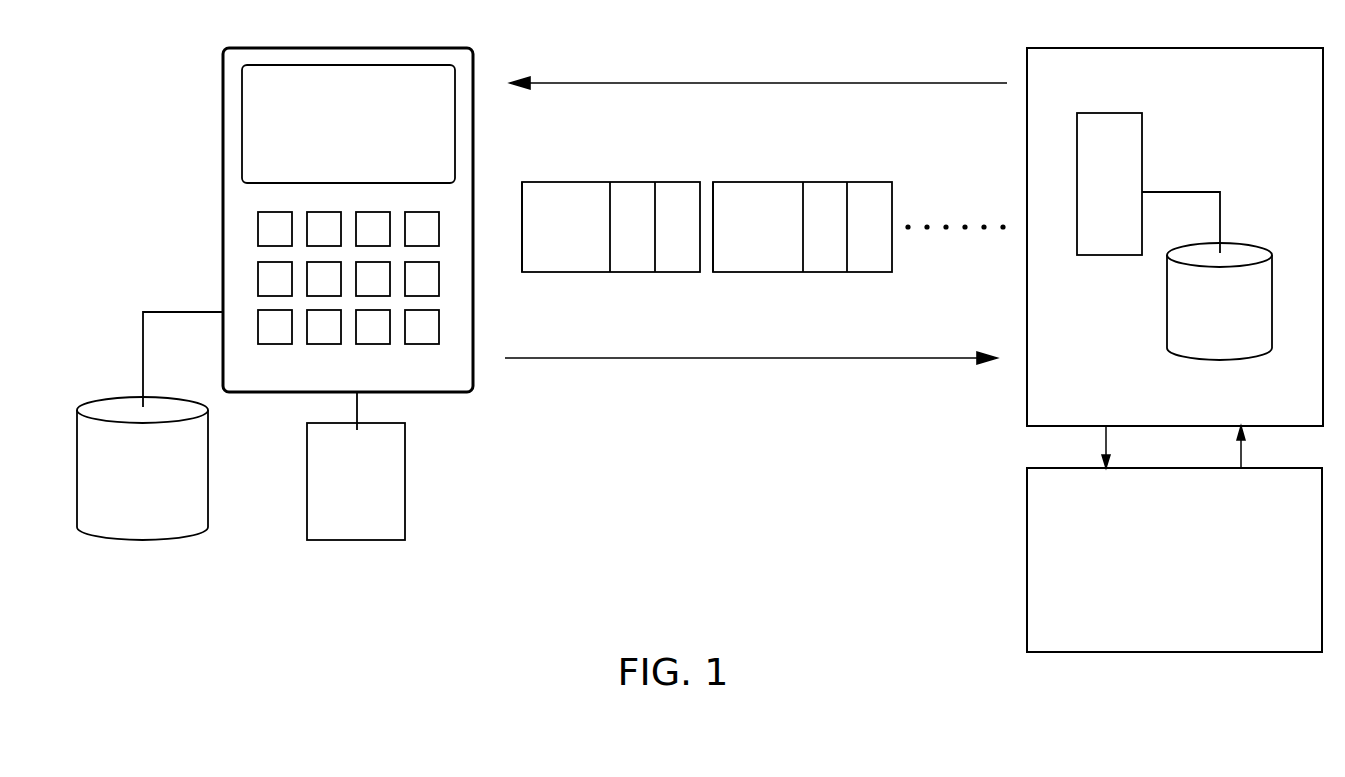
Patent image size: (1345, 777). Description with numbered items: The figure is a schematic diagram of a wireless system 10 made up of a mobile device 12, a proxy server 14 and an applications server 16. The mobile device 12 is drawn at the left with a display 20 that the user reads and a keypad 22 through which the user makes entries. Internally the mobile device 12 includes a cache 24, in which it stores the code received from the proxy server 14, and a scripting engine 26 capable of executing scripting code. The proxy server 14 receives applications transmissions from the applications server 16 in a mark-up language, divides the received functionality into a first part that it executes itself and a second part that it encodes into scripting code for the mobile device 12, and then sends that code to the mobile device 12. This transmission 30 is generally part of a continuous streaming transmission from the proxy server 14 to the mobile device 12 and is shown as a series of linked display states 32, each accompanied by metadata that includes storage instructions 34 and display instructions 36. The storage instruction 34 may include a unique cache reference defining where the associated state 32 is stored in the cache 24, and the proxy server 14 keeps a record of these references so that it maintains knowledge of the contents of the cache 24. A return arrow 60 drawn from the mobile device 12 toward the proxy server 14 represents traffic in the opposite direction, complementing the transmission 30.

The wireless system 10 is at (608, 452).
The mobile device 12 is at (309, 202).
The proxy server 14 is at (1047, 48).
The applications server 16 is at (1050, 468).
The display 20 is at (348, 124).
The keypad 22 is at (240, 215).
The cache 24 is at (150, 426).
The scripting engine 26 is at (356, 466).
The transmission 30 is at (745, 83).
The display state 32 is at (642, 227).
The storage instruction 34 is at (723, 227).
The display instruction 36 is at (767, 227).
The upstream data transmission 60 is at (735, 358).